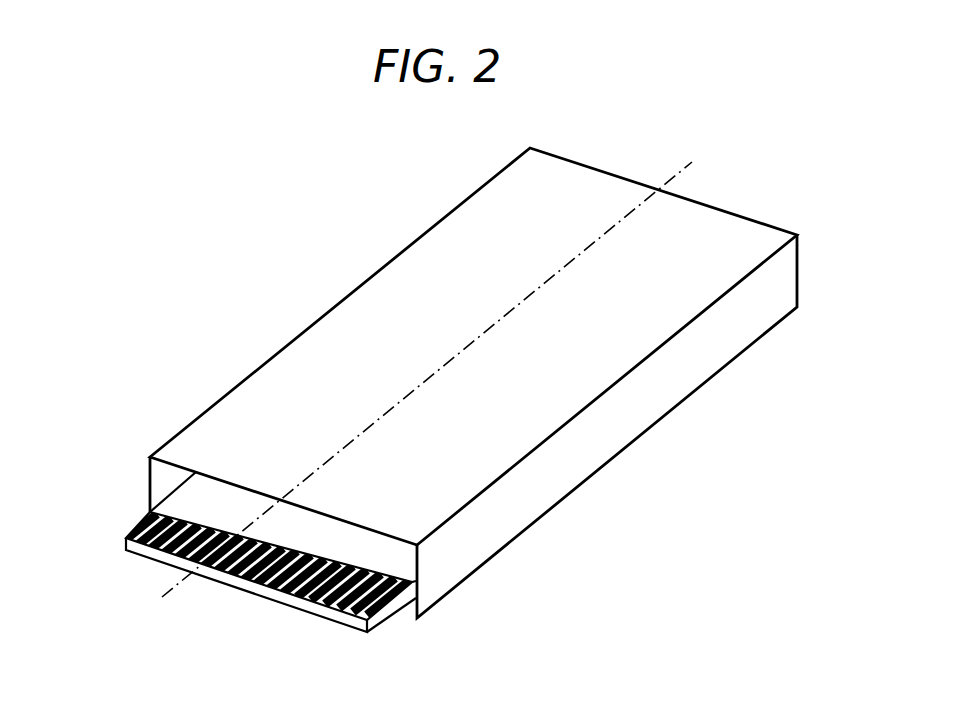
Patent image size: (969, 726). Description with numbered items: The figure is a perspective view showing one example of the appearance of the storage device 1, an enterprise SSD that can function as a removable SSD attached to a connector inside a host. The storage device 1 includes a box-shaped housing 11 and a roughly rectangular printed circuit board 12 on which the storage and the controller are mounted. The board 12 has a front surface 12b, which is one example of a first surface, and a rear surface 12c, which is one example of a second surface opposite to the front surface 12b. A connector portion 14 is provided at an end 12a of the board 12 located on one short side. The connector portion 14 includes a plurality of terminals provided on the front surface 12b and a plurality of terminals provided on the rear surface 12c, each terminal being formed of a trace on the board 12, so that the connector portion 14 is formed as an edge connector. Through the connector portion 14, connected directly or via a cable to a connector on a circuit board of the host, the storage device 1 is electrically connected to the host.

The storage device 1 is at (431, 415).
The housing 11 is at (628, 414).
The printed circuit board 12 is at (288, 533).
The end of the board 12a is at (160, 507).
The front surface 12b is at (188, 503).
The rear surface 12c is at (408, 598).
The connector portion 14 is at (258, 568).